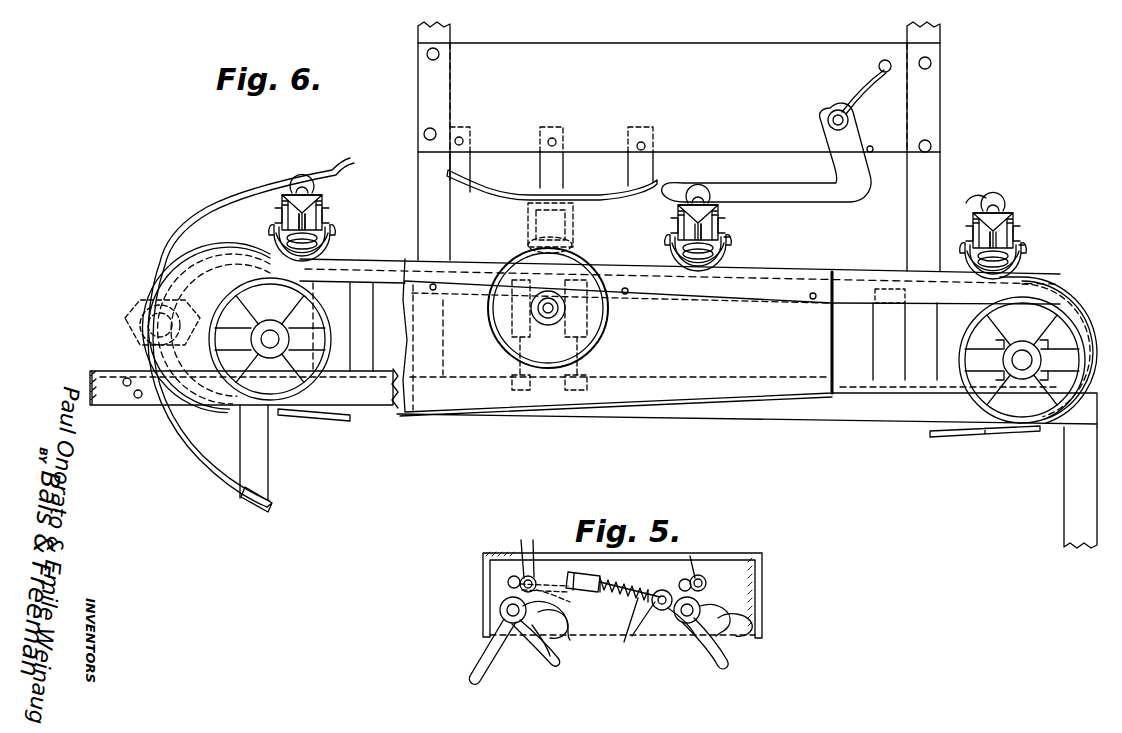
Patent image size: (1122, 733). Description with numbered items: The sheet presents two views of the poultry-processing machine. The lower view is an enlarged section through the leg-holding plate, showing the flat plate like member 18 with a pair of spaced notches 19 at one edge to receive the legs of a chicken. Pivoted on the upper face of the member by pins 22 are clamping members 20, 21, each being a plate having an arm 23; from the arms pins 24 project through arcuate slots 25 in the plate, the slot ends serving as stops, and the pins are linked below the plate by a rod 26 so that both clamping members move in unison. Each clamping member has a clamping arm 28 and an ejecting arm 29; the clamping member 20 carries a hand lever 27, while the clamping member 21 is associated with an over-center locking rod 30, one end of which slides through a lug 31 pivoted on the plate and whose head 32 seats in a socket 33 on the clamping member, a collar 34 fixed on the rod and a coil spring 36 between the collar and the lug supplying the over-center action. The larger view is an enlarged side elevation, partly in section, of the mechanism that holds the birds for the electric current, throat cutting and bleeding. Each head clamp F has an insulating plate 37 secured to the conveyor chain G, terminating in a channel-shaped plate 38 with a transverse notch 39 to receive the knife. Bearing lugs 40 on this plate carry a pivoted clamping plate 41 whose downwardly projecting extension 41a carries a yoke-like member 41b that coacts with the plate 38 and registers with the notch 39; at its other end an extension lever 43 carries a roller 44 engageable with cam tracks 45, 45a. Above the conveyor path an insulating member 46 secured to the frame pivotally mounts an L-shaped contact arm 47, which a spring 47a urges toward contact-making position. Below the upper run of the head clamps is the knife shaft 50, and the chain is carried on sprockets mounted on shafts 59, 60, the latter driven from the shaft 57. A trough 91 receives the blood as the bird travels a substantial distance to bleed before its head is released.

In FIG. 5, the flat plate like member 18 is at (724, 570).
In FIG. 5, the spaced notches 19 is at (556, 640).
In FIG. 5, the clamping member 20 is at (505, 626).
In FIG. 5, the clamping member 21 is at (690, 630).
In FIG. 5, the pins 22 is at (508, 611).
In FIG. 5, the arm 23 is at (528, 538).
In FIG. 5, the pins 24 is at (534, 576).
In FIG. 5, the arcuate slots 25 is at (513, 576).
In FIG. 5, the rod 26 is at (564, 598).
In FIG. 5, the hand lever 27 is at (478, 665).
In FIG. 5, the clamping arm 28 is at (540, 656).
In FIG. 5, the ejecting arm 29 is at (568, 630).
In FIG. 5, the over-center locking rod 30 is at (616, 586).
In FIG. 5, the lug 31 is at (568, 576).
In FIG. 5, the head 32 is at (630, 638).
In FIG. 5, the socket 33 is at (662, 610).
In FIG. 5, the collar 34 is at (634, 602).
In FIG. 5, the coil spring 36 is at (610, 594).
In FIG. 6, the plate 37 is at (322, 256).
In FIG. 6, the plate 38 is at (330, 237).
In FIG. 6, the transverse notch 39 is at (722, 256).
In FIG. 6, the bearing lugs 40 is at (328, 212).
In FIG. 6, the clamping plate 41 is at (282, 205).
In FIG. 6, the downwardly projecting extension 41a is at (296, 217).
In FIG. 6, the yoke-like member 41b is at (330, 216).
In FIG. 6, the extension lever 43 is at (984, 204).
In FIG. 6, the roller 44 is at (314, 186).
In FIG. 6, the cam track 45 is at (604, 196).
In FIG. 6, the cam track 45a is at (208, 208).
In FIG. 6, the insulating member 46 is at (679, 146).
In FIG. 6, the contact arm 47 is at (766, 190).
In FIG. 6, the spring 47a is at (868, 100).
In FIG. 6, the shaft 50 is at (548, 318).
In FIG. 6, the shaft 57 is at (606, 308).
In FIG. 6, the shaft 59 is at (280, 340).
In FIG. 6, the shaft 60 is at (1008, 360).
In FIG. 6, the trough 91 is at (686, 402).
In FIG. 6, the head clamp F is at (128, 316).
In FIG. 6, the conveyor chain G is at (334, 424).